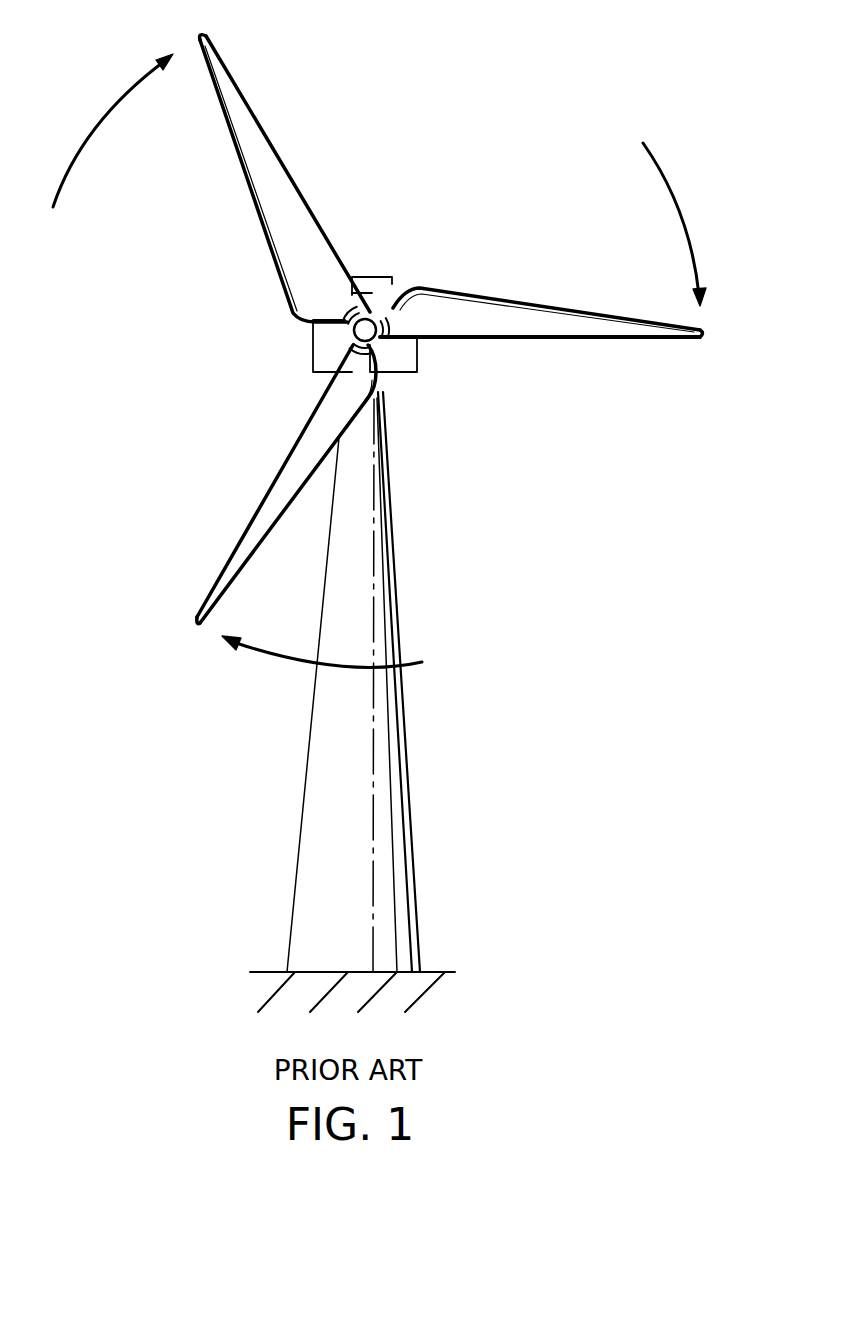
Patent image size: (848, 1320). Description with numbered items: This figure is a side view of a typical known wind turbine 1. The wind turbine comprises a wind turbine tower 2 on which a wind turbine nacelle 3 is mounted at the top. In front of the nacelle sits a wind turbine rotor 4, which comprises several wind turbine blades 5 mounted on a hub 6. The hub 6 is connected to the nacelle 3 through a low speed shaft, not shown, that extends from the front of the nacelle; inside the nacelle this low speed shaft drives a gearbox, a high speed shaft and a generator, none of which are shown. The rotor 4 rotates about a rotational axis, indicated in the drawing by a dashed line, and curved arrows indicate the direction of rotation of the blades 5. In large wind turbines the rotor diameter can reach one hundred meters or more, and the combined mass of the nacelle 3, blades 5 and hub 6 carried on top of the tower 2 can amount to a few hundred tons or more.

The wind turbine 1 is at (520, 806).
The wind turbine tower 2 is at (403, 715).
The wind turbine nacelle 3 is at (408, 360).
The wind turbine rotor 4 is at (503, 171).
The wind turbine blades 5 is at (528, 310).
The hub 6 is at (366, 329).